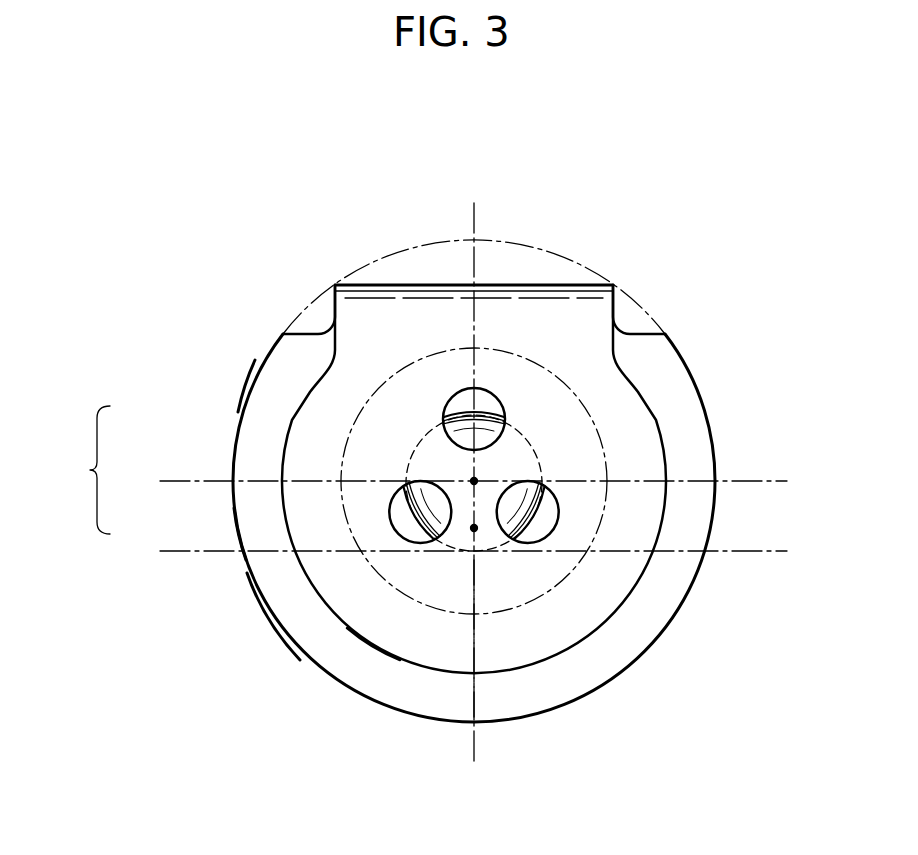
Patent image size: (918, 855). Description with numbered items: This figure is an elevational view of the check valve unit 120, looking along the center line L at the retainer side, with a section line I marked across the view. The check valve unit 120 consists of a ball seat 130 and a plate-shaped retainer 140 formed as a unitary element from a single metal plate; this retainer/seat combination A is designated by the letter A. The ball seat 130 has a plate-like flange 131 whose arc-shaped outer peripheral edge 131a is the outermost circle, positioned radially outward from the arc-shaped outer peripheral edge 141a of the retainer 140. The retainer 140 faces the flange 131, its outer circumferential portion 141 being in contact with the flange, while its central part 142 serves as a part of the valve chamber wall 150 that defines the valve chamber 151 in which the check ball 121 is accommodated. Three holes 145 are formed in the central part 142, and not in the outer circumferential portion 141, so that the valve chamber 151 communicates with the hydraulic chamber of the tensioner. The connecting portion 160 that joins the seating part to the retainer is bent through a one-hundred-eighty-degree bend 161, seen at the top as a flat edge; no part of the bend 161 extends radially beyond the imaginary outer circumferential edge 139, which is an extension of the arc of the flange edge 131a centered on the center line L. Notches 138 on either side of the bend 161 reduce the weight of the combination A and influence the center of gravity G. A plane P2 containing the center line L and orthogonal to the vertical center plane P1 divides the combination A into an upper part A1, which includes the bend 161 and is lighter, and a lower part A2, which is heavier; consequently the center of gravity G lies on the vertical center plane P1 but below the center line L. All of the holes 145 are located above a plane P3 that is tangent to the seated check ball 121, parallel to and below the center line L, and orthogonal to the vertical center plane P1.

The check valve unit 120 is at (248, 322).
The check ball 121 is at (483, 430).
The ball seat 130 is at (267, 620).
The flange 131 is at (277, 378).
The outer peripheral edge of the flange 131a is at (247, 573).
The notches 138 is at (318, 333).
The imaginary outer circumferential edge 139 is at (385, 258).
The retainer 140 is at (614, 616).
The outer circumferential portion of the retainer 141 is at (623, 432).
The outer peripheral edge of the retainer 141a is at (347, 628).
The central part of the retainer 142 is at (474, 466).
The valve chamber wall 150 is at (540, 415).
The holes 145 is at (478, 431).
The valve chamber 151 is at (388, 576).
The connecting portion 160 is at (474, 225).
The bend 161 is at (428, 288).
The retainer/seat combination A is at (85, 470).
The first part of the retainer/seat combination A1 is at (237, 413).
The second part of the retainer/seat combination A2 is at (233, 509).
The center line L is at (474, 481).
The center of gravity G is at (474, 528).
The vertical center plane P1 is at (477, 633).
The plane P2 is at (755, 478).
The tangential plane P3 is at (755, 553).
The section line I- I is at (474, 203).